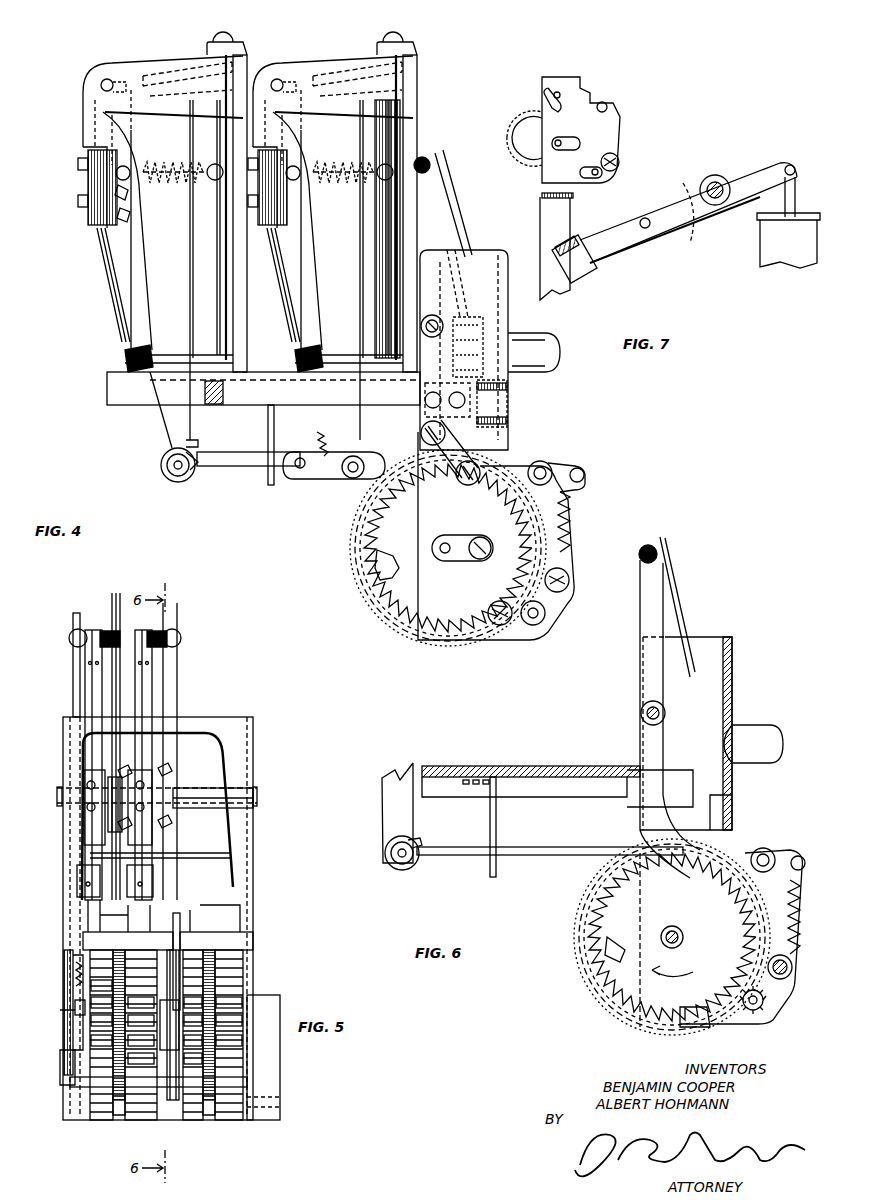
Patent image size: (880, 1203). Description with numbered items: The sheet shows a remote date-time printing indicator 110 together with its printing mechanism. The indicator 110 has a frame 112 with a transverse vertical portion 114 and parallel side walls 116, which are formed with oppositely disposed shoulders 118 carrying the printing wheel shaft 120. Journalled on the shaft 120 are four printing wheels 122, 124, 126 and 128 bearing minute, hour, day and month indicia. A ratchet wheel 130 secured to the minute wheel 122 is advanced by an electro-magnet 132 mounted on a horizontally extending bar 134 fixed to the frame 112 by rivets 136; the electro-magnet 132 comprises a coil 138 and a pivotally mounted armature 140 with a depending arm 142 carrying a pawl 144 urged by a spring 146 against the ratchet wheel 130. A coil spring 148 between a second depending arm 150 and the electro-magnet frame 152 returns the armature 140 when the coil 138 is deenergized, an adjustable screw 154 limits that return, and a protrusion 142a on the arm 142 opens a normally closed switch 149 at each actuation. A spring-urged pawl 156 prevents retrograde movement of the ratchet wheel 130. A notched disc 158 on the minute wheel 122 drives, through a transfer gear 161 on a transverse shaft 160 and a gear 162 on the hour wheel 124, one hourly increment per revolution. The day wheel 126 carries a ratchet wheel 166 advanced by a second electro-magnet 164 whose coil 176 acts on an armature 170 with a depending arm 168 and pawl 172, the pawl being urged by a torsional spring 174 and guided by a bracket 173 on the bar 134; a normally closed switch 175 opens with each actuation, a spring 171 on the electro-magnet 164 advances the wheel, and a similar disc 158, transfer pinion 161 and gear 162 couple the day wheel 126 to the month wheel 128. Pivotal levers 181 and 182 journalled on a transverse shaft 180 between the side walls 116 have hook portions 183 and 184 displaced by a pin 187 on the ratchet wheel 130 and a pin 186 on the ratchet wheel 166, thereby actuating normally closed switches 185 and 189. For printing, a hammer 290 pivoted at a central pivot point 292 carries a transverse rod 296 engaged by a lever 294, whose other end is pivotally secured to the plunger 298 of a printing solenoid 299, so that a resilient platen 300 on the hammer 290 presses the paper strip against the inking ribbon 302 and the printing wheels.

In FIG. 4, the remote date-time indicator 110 is at (417, 96).
In FIG. 5, the remote date-time indicator 110 is at (253, 898).
In FIG. 4, the frame 112 is at (512, 322).
In FIG. 5, the frame 112 is at (254, 757).
In FIG. 6, the frame 112 is at (737, 690).
In FIG. 4, the transverse vertical portion 114 is at (507, 412).
In FIG. 5, the transverse vertical portion 114 is at (225, 732).
In FIG. 4, the side walls 116 is at (470, 262).
In FIG. 7, the side walls 116 is at (525, 248).
In FIG. 5, the side walls 116 is at (67, 830).
In FIG. 6, the side walls 116 is at (702, 642).
In FIG. 4, the shoulders 118 is at (567, 567).
In FIG. 7, the shoulders 118 is at (585, 113).
In FIG. 5, the shoulders 118 is at (68, 1062).
In FIG. 6, the shoulders 118 is at (773, 993).
In FIG. 4, the printing wheel shaft 120 is at (447, 545).
In FIG. 5, the printing wheel shaft 120 is at (70, 1013).
In FIG. 6, the printing wheel shaft 120 is at (683, 935).
In FIG. 4, the printing wheel 122 is at (407, 633).
In FIG. 7, the printing wheel 122 is at (523, 117).
In FIG. 5, the printing wheel 122 is at (107, 1115).
In FIG. 6, the printing wheel 122 is at (672, 937).
In FIG. 5, the printing wheel 124 is at (160, 1103).
In FIG. 5, the printing wheel 126 is at (193, 920).
In FIG. 6, the printing wheel 126 is at (593, 1010).
In FIG. 5, the printing wheel 128 is at (237, 975).
In FIG. 4, the ratchet wheel 130 is at (383, 583).
In FIG. 5, the ratchet wheel 130 is at (95, 1113).
In FIG. 4, the electro-magnet 132 is at (284, 62).
In FIG. 4, the horizontally extending bar 134 is at (117, 392).
In FIG. 6, the horizontally extending bar 134 is at (522, 766).
In FIG. 4, the rivets 136 is at (452, 403).
In FIG. 4, the coil 138 is at (377, 147).
In FIG. 4, the armature 140 is at (335, 68).
In FIG. 4, the depending arm 142 is at (327, 383).
In FIG. 4, the protrusion 142a is at (317, 345).
In FIG. 4, the pawl 144 is at (327, 472).
In FIG. 4, the spring 146 is at (316, 433).
In FIG. 4, the coil spring 148 is at (333, 165).
In FIG. 4, the normally closed switch 149 is at (256, 250).
In FIG. 5, the normally closed switch 149 is at (90, 693).
In FIG. 4, the second depending arm 150 is at (294, 183).
In FIG. 4, the electro-magnet frame 152 is at (408, 147).
In FIG. 4, the adjustable screw 154 is at (395, 38).
In FIG. 4, the pawl 156 is at (567, 473).
In FIG. 5, the pawl 156 is at (82, 985).
In FIG. 6, the pawl 156 is at (783, 857).
In FIG. 5, the disc 158 is at (118, 1110).
In FIG. 6, the disc 158 is at (710, 1022).
In FIG. 5, the transverse shaft 160 is at (85, 1093).
In FIG. 4, the transfer gear 161 is at (533, 613).
In FIG. 5, the transfer gear 161 is at (120, 1117).
In FIG. 6, the transfer gear 161 is at (773, 1017).
In FIG. 5, the gear 162 is at (127, 1103).
In FIG. 4, the electro-magnet 164 is at (118, 62).
In FIG. 5, the ratchet wheel 166 is at (178, 1103).
In FIG. 6, the ratchet wheel 166 is at (650, 990).
In FIG. 4, the depending arm 168 is at (158, 328).
In FIG. 6, the depending arm 168 is at (390, 790).
In FIG. 4, the armature 170 is at (170, 68).
In FIG. 4, the spring 171 is at (163, 165).
In FIG. 4, the pawl 172 is at (237, 466).
In FIG. 6, the pawl 172 is at (468, 855).
In FIG. 4, the bracket 173 is at (268, 430).
In FIG. 6, the bracket 173 is at (498, 815).
In FIG. 4, the torsional spring 174 is at (190, 478).
In FIG. 6, the torsional spring 174 is at (430, 860).
In FIG. 4, the normally closed switch 175 is at (102, 218).
In FIG. 5, the normally closed switch 175 is at (142, 708).
In FIG. 4, the coil 176 is at (207, 307).
In FIG. 4, the transverse shaft 180 is at (440, 320).
In FIG. 5, the transverse shaft 180 is at (257, 800).
In FIG. 6, the transverse shaft 180 is at (665, 712).
In FIG. 4, the pivotal lever 181 is at (422, 221).
In FIG. 7, the pivotal lever 181 is at (523, 127).
In FIG. 5, the pivotal lever 181 is at (123, 623).
In FIG. 5, the pivotal lever 182 is at (173, 678).
In FIG. 6, the pivotal lever 182 is at (650, 687).
In FIG. 4, the terminal hook portion 183 is at (383, 567).
In FIG. 6, the terminal hook portion 184 is at (607, 953).
In FIG. 4, the normally closed switch 185 is at (433, 181).
In FIG. 6, the pin 186 is at (580, 980).
In FIG. 4, the pin 187 is at (397, 573).
In FIG. 6, the normally closed switch 189 is at (672, 580).
In FIG. 7, the printing hammer 290 is at (623, 247).
In FIG. 7, the central pivot point 292 is at (717, 183).
In FIG. 7, the lever 294 is at (690, 243).
In FIG. 7, the transverse rod 296 is at (647, 220).
In FIG. 7, the plunger 298 is at (785, 197).
In FIG. 7, the printing solenoid 299 is at (793, 250).
In FIG. 7, the platen 300 is at (577, 234).
In FIG. 7, the inking ribbon 302 is at (557, 210).